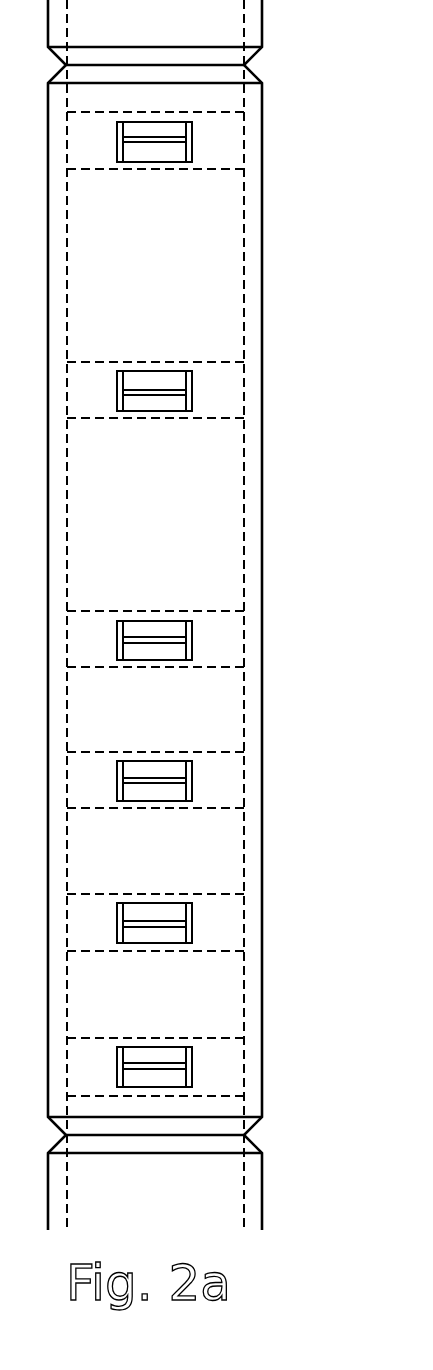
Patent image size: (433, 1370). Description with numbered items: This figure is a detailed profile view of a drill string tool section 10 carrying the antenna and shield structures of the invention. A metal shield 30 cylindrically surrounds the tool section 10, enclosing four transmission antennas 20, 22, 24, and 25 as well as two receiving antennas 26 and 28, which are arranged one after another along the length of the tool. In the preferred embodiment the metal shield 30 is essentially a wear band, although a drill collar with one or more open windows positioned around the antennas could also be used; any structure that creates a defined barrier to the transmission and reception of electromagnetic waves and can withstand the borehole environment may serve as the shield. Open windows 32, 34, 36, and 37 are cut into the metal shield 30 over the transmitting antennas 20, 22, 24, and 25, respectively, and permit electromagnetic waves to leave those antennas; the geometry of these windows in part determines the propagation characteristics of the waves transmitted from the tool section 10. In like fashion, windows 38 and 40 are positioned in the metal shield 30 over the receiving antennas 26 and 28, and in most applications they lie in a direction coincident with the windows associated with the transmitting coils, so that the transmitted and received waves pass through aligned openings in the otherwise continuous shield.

The tool section 10 is at (272, 278).
The transmission antenna 20 is at (235, 130).
The transmission antenna 22 is at (235, 382).
The transmission antenna 24 is at (235, 635).
The transmission antenna 25 is at (235, 775).
The receiving antenna 26 is at (235, 918).
The receiving antenna 28 is at (235, 1058).
The metal shield 30 is at (263, 562).
The window 32 is at (193, 141).
The window 34 is at (193, 393).
The window 36 is at (193, 646).
The window 37 is at (193, 787).
The window 38 is at (193, 930).
The window 40 is at (193, 1070).